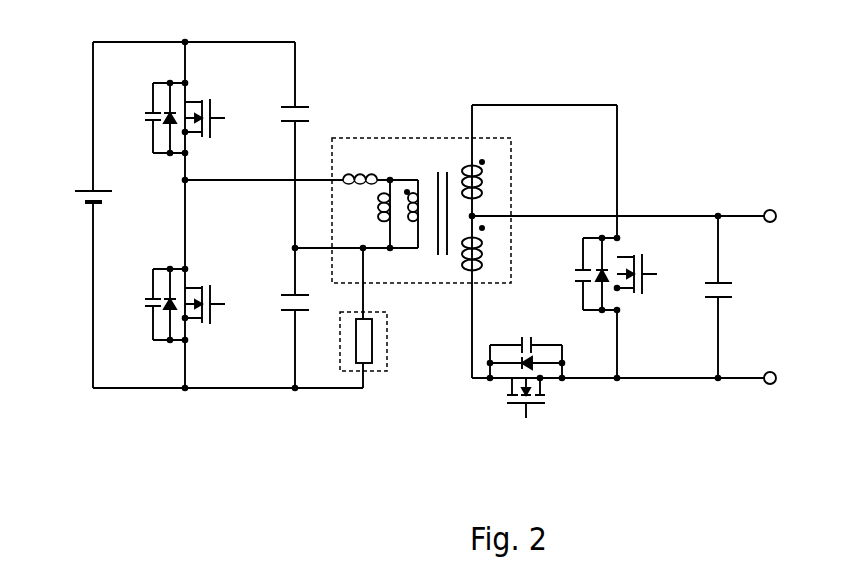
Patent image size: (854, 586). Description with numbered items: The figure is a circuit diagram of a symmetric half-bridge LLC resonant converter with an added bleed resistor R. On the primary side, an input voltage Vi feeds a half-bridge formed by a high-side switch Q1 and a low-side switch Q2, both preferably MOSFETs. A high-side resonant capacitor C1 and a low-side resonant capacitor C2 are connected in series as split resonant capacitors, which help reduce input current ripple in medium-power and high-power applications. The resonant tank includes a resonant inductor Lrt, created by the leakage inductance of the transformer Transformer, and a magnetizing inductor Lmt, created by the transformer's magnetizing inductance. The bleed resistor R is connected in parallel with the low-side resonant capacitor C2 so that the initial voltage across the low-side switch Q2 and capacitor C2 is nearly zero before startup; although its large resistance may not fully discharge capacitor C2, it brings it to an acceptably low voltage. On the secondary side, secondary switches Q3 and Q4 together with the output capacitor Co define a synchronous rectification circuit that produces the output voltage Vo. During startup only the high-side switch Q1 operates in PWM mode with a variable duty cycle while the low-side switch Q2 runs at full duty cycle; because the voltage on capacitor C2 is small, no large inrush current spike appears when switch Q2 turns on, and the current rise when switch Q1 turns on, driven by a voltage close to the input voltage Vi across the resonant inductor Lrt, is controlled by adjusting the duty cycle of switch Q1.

The input voltage Vi is at (80, 195).
The high-side switch Q1 is at (187, 125).
The low-side switch Q2 is at (186, 317).
The high-side resonant capacitor C1 is at (308, 118).
The low-side resonant capacitor C2 is at (311, 301).
The bleed resistor R is at (406, 338).
The transformer Transformer is at (474, 241).
The resonant inductor Lrt is at (358, 168).
The magnetizing inductor Lmt is at (370, 214).
The secondary switch Q3 is at (534, 385).
The secondary switch Q4 is at (616, 284).
The output capacitor Co is at (734, 297).
The output voltage Vo is at (789, 297).